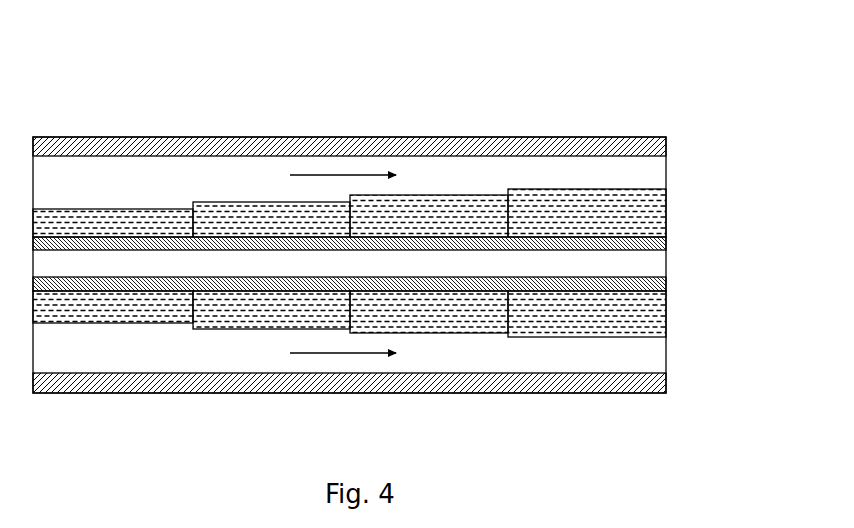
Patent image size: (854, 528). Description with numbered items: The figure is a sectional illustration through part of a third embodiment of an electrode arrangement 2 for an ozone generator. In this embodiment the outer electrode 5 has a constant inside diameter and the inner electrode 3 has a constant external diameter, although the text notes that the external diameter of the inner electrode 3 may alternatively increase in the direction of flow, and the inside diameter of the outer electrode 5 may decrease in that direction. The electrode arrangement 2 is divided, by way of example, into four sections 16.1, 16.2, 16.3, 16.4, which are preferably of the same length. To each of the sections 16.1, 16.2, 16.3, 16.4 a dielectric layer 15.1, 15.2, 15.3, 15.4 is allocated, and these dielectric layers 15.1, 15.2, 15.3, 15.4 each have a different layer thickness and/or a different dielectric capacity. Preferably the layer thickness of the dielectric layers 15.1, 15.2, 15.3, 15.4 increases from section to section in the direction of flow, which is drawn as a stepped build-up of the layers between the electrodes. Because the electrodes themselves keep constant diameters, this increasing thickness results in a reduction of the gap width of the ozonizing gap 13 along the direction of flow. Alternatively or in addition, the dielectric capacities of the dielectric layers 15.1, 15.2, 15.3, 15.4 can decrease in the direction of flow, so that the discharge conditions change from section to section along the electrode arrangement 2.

The electrode arrangement 2 is at (680, 72).
The outer electrode 5 is at (666, 142).
The inner electrode 3 is at (666, 240).
The ozonizing gap 13 is at (666, 352).
The section 16.1 is at (115, 117).
The section 16.2 is at (288, 117).
The section 16.3 is at (440, 117).
The section 16.4 is at (582, 114).
The dielectric layer 15.1 is at (97, 323).
The dielectric layer 15.2 is at (228, 329).
The dielectric layer 15.3 is at (447, 333).
The dielectric layer 15.4 is at (583, 337).